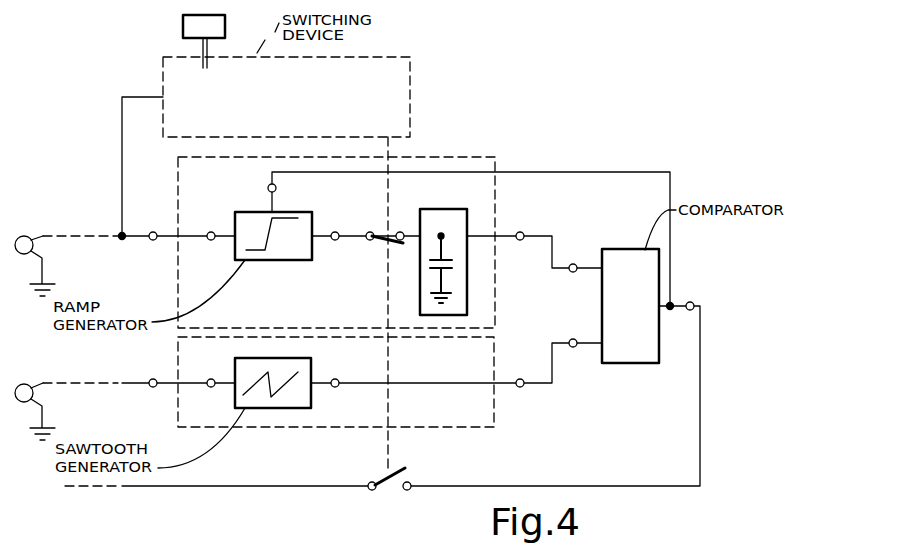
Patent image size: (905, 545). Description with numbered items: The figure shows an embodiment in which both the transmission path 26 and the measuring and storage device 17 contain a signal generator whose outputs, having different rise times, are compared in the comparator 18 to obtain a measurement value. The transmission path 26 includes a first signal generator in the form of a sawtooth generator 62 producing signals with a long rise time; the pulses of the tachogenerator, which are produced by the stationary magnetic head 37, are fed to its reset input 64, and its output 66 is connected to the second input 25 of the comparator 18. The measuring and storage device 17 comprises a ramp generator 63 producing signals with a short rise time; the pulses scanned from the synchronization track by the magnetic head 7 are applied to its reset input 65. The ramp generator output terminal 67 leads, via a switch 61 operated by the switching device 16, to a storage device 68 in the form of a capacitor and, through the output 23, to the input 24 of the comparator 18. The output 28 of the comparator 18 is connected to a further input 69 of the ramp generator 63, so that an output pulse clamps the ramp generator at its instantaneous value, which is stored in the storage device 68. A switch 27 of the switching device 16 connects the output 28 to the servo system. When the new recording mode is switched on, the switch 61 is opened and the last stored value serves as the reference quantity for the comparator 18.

The magnetic head 7 is at (28, 238).
The stationary magnetic head 37 is at (28, 386).
The switching device 16 is at (415, 80).
The measuring and storage device 17 is at (458, 155).
The comparator 18 is at (647, 358).
The output of the measuring and storage device 23 is at (520, 242).
The input of the comparator 24 is at (573, 262).
The second input of the comparator 25 is at (573, 349).
The transmission path 26 is at (497, 409).
The switch 27 is at (392, 491).
The output of the comparator 28 is at (690, 300).
The switch 61 is at (386, 232).
The sawtooth generator 62 is at (270, 410).
The ramp generator 63 is at (283, 254).
The reset input 64 is at (211, 388).
The reset input 65 is at (211, 241).
The output of the sawtooth generator 66 is at (335, 388).
The terminal 67 is at (335, 241).
The storage device 68 is at (455, 250).
The further input of the ramp generator 69 is at (277, 188).